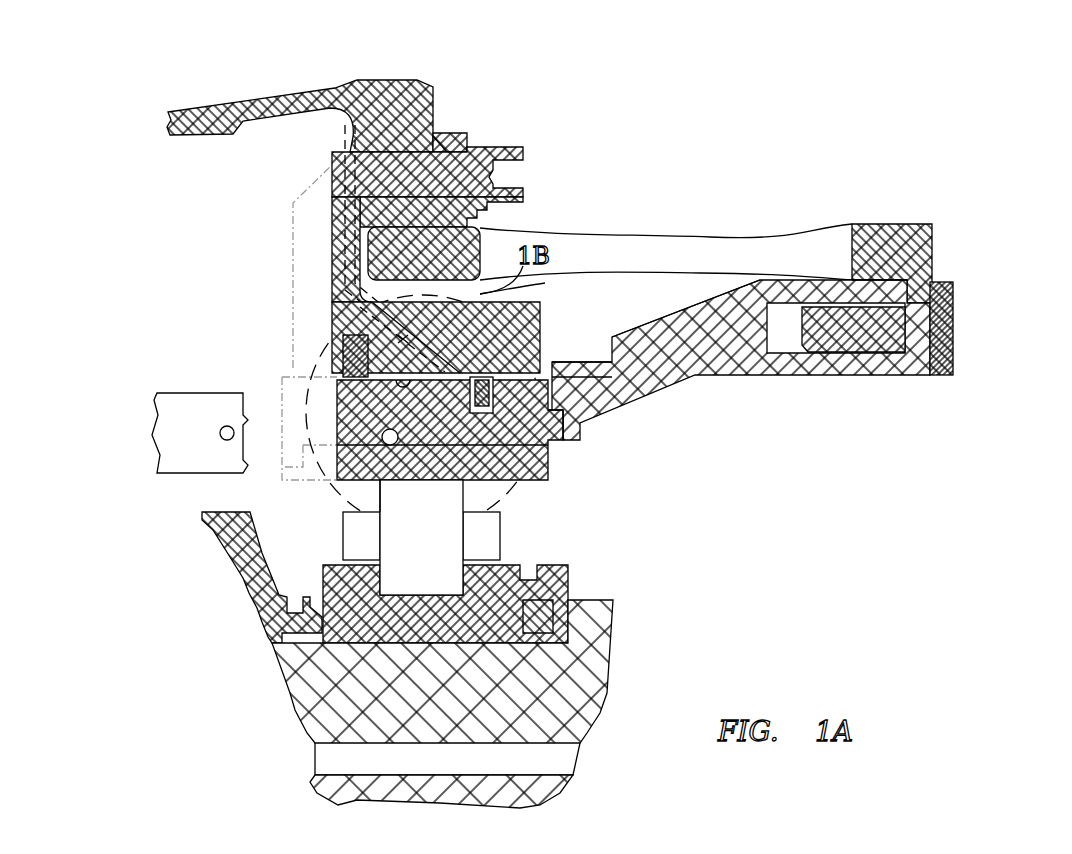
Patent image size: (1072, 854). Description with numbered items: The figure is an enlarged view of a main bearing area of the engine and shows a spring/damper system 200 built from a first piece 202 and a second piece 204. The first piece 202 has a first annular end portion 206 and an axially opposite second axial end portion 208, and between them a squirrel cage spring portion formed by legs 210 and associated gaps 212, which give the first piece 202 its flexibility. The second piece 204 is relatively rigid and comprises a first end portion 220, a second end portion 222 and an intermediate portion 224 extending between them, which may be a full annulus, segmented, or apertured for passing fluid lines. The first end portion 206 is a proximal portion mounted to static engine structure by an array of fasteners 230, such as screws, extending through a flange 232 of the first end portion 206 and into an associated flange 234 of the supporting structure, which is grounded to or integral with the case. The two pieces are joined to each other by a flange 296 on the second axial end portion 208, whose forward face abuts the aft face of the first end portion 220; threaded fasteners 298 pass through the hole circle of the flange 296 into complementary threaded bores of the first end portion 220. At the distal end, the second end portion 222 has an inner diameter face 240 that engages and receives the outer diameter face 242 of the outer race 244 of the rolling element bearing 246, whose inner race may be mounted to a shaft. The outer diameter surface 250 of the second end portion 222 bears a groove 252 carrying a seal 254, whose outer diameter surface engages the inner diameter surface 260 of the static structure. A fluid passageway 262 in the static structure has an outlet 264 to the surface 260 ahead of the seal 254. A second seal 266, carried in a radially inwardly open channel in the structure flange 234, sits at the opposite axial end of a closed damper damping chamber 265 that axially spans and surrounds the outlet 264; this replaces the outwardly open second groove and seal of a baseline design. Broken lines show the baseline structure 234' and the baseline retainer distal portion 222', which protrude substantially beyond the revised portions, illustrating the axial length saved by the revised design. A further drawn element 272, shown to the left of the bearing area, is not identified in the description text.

The spring/damper system 200 is at (598, 441).
The first piece 202 is at (656, 217).
The second piece 204 is at (803, 355).
The first annular end portion 206 is at (440, 243).
The second axial end portion 208 is at (897, 247).
The legs 210 is at (807, 240).
The gaps 212 is at (727, 249).
The first end portion 220 is at (887, 293).
The second end portion 222 is at (463, 446).
The baseline retainer distal portion 222' is at (233, 444).
The intermediate portion 224 is at (662, 363).
The fasteners 230 is at (403, 223).
The flange 232 is at (453, 142).
The flange 234 is at (347, 113).
The baseline structure 234' is at (259, 266).
The inner diameter face 240 is at (520, 468).
The outer diameter face 242 is at (395, 445).
The outer race 244 is at (477, 480).
The rolling element bearing 246 is at (383, 548).
The outer diameter surface 250 is at (540, 353).
The groove 252 is at (497, 404).
The seal 254 is at (535, 432).
The inner diameter surface 260 is at (450, 372).
The fluid passageway 262 is at (380, 330).
The outlet 264 is at (450, 435).
The damper damping chamber 265 is at (495, 322).
The second seal 266 is at (343, 363).
The clip 272 is at (370, 428).
The flange 296 is at (955, 299).
The threaded fasteners 298 is at (963, 338).